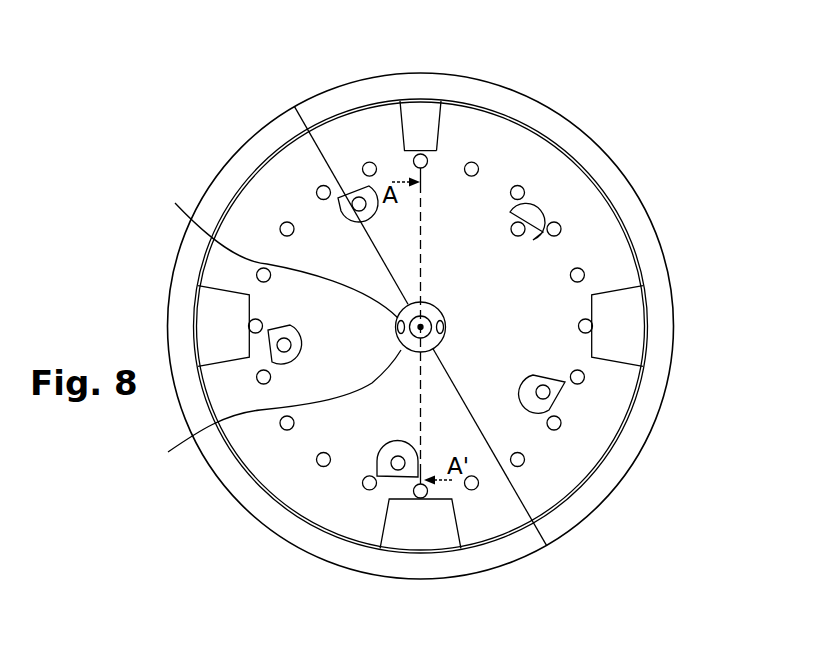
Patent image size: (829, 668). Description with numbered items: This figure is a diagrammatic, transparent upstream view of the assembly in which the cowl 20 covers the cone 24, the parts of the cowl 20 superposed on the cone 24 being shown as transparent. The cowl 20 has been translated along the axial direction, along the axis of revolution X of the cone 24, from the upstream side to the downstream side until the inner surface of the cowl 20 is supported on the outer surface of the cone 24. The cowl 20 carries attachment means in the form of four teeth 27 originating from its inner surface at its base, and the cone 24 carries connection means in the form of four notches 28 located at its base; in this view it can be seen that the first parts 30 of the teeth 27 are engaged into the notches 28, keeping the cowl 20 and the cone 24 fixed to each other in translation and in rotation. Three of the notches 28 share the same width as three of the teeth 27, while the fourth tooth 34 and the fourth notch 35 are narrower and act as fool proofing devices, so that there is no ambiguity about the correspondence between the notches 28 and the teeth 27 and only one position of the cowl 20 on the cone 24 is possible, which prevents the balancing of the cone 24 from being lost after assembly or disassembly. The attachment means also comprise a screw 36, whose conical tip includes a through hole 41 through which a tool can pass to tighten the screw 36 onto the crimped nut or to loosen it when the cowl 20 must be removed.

The cowl 20 is at (612, 483).
The cone 24 is at (548, 518).
The teeth 27 is at (638, 336).
The notches 28 is at (423, 540).
The first parts of the teeth 30 is at (624, 308).
The fourth tooth 34 is at (410, 110).
The fourth notch 35 is at (431, 110).
The screw 36 is at (269, 411).
The through hole 41 is at (271, 247).
The axis of revolution X is at (420, 327).